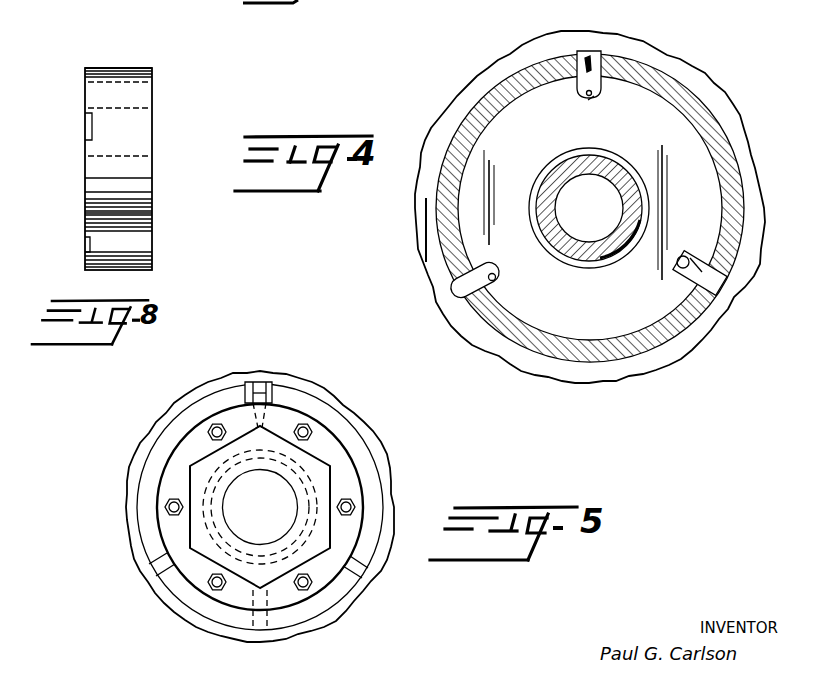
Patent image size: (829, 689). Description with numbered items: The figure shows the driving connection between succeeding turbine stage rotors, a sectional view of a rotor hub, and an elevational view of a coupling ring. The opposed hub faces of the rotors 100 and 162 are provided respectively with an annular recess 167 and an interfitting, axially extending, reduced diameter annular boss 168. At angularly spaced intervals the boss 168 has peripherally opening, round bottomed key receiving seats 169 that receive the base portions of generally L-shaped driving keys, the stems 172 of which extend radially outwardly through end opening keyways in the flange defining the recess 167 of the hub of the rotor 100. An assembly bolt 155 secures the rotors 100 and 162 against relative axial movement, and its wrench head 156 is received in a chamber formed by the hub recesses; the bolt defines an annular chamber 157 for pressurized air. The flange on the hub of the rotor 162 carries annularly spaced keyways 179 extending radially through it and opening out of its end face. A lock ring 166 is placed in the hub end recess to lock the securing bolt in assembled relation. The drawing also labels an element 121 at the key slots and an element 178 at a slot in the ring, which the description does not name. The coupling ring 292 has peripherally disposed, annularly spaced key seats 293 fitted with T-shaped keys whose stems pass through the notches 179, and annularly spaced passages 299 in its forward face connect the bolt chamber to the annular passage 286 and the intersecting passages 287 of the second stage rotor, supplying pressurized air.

In FIG. 4, the rotor 100 is at (428, 250).
In FIG. 4, the bolt 121 is at (593, 101).
In FIG. 4, the assembly bolt 155 is at (603, 258).
In FIG. 5, the wrench head 156 is at (212, 553).
In FIG. 4, the chamber 157 is at (645, 186).
In FIG. 5, the chamber 157 is at (284, 622).
In FIG. 4, the turbine rotor 162 is at (667, 138).
In FIG. 5, the turbine rotor 162 is at (340, 411).
In FIG. 5, the lock ring 166 is at (312, 434).
In FIG. 4, the annular recess 167 is at (537, 327).
In FIG. 4, the annular boss 168 is at (600, 345).
In FIG. 5, the annular boss 168 is at (208, 433).
In FIG. 4, the key receiving seat 169 is at (589, 99).
In FIG. 4, the stem 172 is at (603, 55).
In FIG. 4, the slot 178 is at (455, 302).
In FIG. 5, the keyway 179 is at (248, 382).
In FIG. 5, the annular passage 286 is at (334, 523).
In FIG. 5, the passage 287 is at (277, 392).
In FIG. 8, the coupling ring 292 is at (155, 98).
In FIG. 8, the key seat 293 is at (150, 68).
In FIG. 8, the passage 299 is at (85, 120).